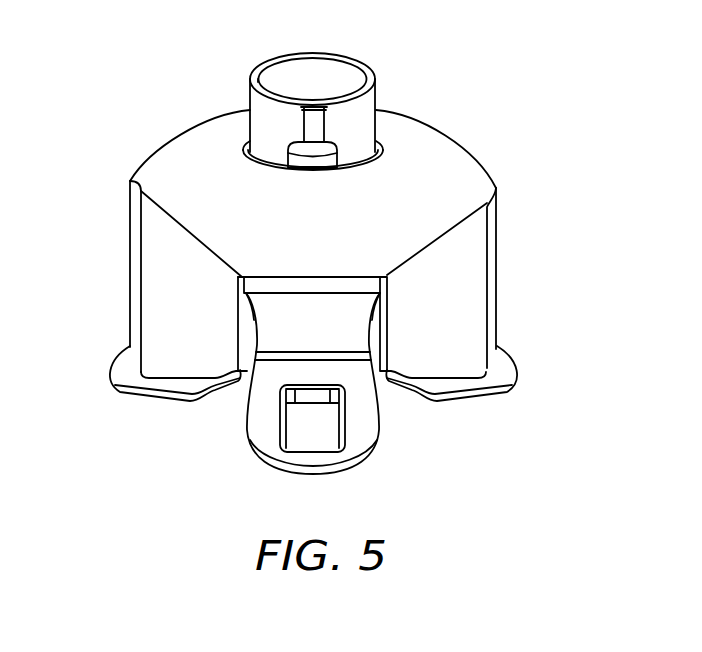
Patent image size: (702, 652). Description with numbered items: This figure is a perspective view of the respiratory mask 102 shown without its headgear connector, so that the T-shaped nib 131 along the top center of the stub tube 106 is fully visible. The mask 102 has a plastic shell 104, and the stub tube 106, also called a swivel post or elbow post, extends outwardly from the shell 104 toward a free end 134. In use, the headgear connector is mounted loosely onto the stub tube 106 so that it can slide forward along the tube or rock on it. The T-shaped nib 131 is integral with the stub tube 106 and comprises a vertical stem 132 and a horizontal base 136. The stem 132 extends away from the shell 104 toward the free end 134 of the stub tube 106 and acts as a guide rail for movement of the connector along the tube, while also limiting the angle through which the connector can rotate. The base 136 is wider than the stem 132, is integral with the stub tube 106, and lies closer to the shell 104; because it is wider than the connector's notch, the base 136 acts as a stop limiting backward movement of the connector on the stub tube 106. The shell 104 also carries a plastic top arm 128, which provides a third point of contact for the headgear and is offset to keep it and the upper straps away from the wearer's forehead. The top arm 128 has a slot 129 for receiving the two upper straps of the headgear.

The respiratory mask 102 is at (339, 248).
The plastic shell 104 is at (165, 189).
The stub tube 106 is at (311, 135).
The top arm 128 is at (313, 383).
The slot 129 is at (313, 427).
The T-shaped nib 131 is at (281, 134).
The stem 132 is at (372, 152).
The free end 134 is at (241, 83).
The base 136 is at (316, 162).